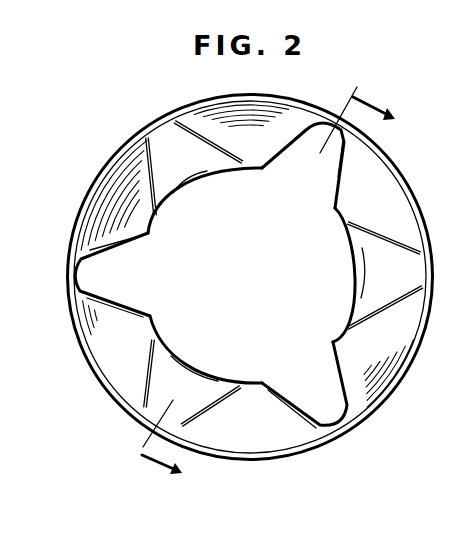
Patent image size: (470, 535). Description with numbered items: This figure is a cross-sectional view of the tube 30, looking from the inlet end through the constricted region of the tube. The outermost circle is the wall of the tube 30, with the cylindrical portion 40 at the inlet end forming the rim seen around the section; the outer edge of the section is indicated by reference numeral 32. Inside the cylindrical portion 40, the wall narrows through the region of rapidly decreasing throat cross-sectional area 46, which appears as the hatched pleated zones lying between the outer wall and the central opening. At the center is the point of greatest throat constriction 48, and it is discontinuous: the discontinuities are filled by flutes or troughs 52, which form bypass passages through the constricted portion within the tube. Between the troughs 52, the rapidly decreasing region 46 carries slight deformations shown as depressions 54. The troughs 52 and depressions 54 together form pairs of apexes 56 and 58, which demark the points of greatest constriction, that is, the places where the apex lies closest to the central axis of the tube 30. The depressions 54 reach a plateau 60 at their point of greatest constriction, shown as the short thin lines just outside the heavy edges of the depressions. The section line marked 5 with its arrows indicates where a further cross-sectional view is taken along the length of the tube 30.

The section line 5- 5 is at (255, 270).
The tube 30 is at (266, 277).
The rim 32 is at (395, 385).
The cylindrical portion 40 is at (414, 190).
The region of rapidly decreasing throat cross-sectional area 46 is at (123, 172).
The point of greatest throat constriction 48 is at (220, 271).
The flutes or troughs 52 is at (318, 126).
The depressions 54 is at (192, 184).
The apex 56 is at (151, 234).
The apex 58 is at (260, 170).
The plateau 60 is at (186, 192).